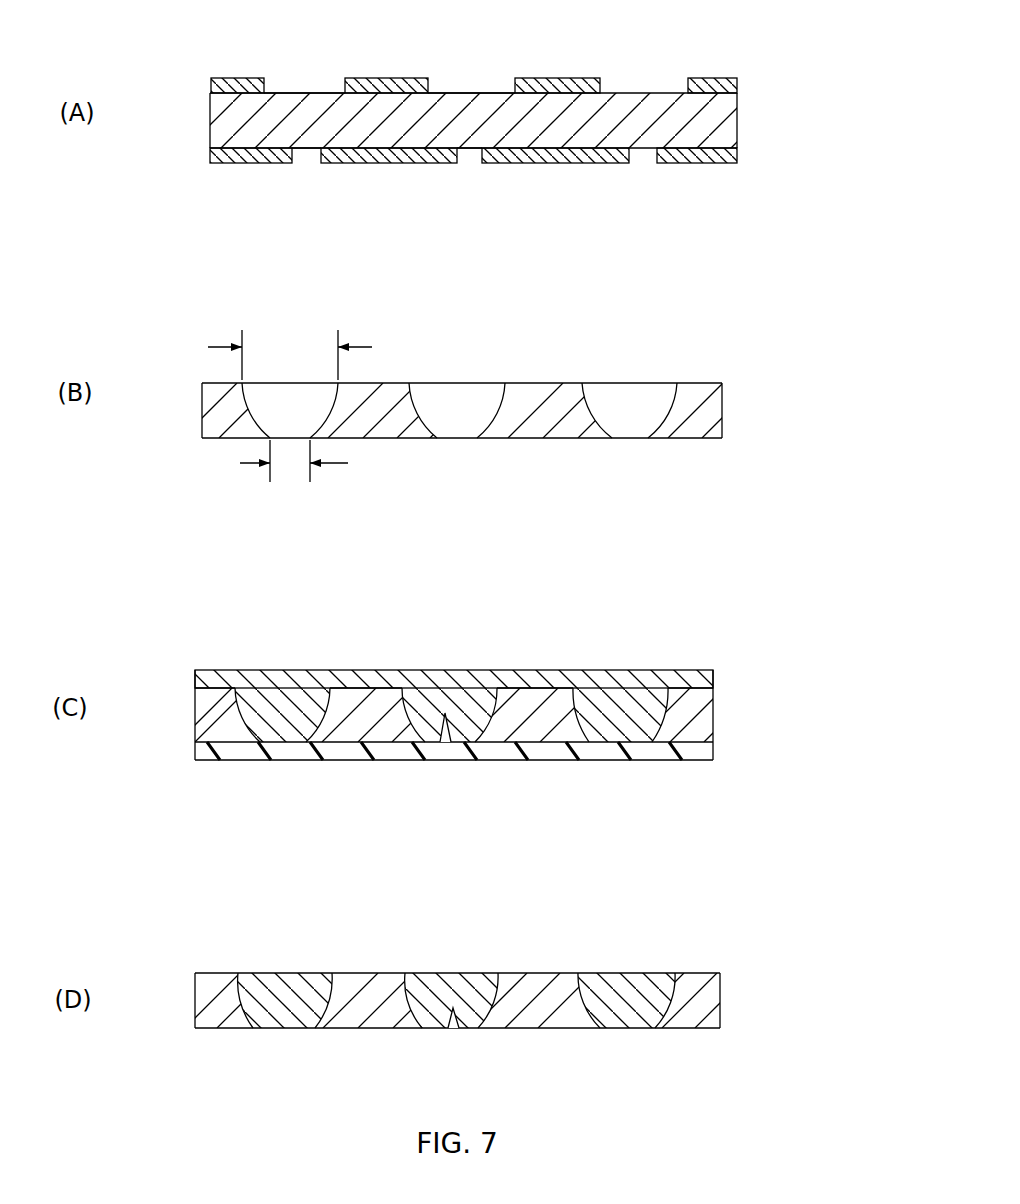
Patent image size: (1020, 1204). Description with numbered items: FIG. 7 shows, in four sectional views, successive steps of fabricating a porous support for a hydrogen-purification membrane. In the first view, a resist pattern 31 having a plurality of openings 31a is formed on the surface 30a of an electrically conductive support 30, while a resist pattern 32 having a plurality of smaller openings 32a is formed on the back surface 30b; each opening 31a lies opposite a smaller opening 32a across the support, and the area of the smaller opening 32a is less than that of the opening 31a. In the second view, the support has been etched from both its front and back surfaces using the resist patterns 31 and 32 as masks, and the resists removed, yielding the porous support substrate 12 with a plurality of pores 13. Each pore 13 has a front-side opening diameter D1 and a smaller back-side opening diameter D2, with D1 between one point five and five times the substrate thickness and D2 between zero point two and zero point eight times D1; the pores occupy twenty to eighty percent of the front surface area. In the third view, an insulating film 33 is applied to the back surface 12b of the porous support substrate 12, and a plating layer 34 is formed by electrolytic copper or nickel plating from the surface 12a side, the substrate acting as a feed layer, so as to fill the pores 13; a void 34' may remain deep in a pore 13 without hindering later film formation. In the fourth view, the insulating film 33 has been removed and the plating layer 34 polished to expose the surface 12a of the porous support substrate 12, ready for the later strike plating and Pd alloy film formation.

The porous support substrate 12 is at (708, 412).
The surface of porous support substrate 12a is at (700, 383).
The back surface of porous support substrate 12b is at (690, 440).
The pore 13 is at (472, 392).
The electrically conductive support 30 is at (728, 112).
The surface of electrically conductive support 30a is at (663, 92).
The back surface of electrically conductive support 30b is at (643, 152).
The resist pattern 31 is at (241, 82).
The opening 31a is at (317, 87).
The resist pattern 32 is at (223, 167).
The smaller opening 32a is at (302, 162).
The insulating film 33 is at (640, 758).
The plating layer 34 is at (454, 817).
The void 34' is at (453, 903).
The opening diameter of the pore on the front surface side D1 is at (290, 355).
The opening diameter of the pore on the back surface side D2 is at (292, 467).